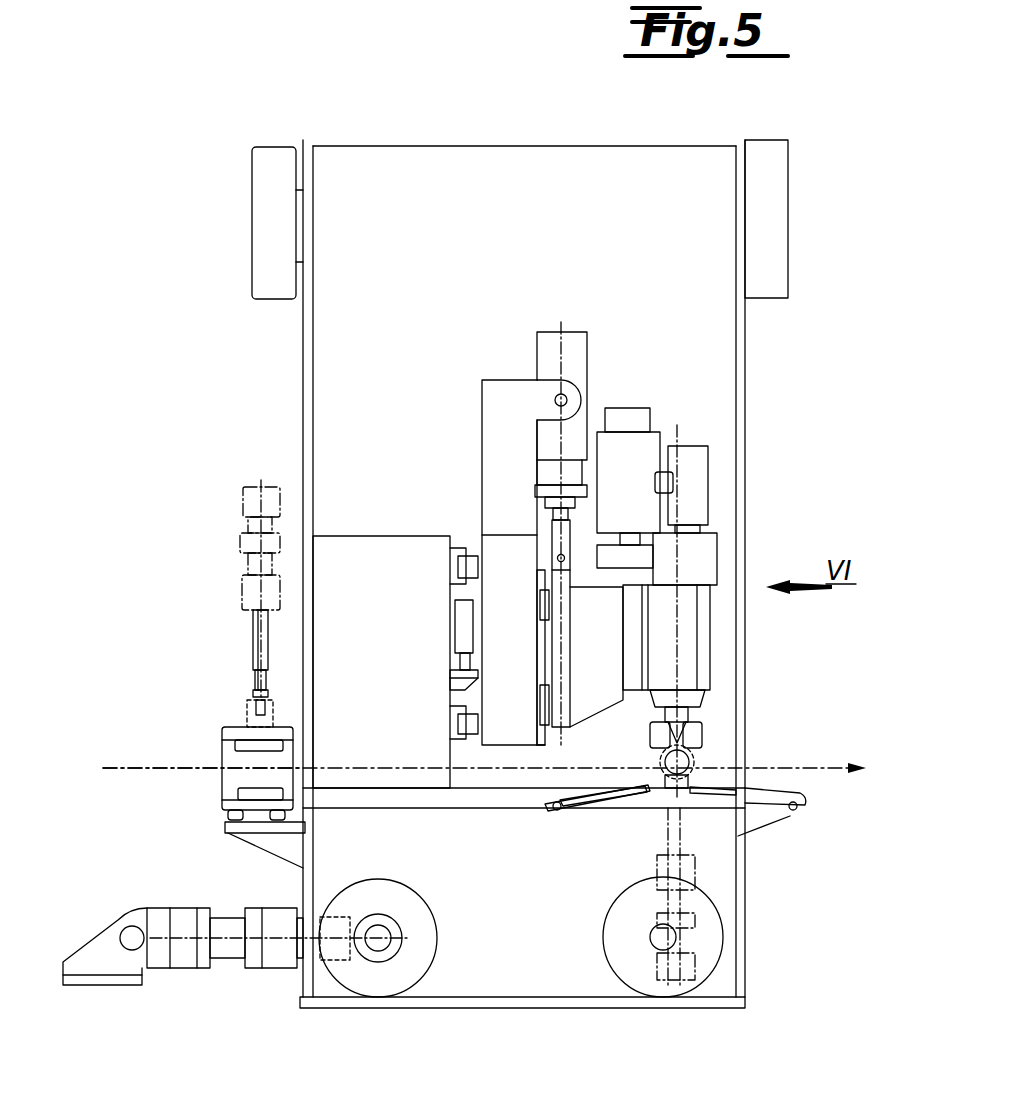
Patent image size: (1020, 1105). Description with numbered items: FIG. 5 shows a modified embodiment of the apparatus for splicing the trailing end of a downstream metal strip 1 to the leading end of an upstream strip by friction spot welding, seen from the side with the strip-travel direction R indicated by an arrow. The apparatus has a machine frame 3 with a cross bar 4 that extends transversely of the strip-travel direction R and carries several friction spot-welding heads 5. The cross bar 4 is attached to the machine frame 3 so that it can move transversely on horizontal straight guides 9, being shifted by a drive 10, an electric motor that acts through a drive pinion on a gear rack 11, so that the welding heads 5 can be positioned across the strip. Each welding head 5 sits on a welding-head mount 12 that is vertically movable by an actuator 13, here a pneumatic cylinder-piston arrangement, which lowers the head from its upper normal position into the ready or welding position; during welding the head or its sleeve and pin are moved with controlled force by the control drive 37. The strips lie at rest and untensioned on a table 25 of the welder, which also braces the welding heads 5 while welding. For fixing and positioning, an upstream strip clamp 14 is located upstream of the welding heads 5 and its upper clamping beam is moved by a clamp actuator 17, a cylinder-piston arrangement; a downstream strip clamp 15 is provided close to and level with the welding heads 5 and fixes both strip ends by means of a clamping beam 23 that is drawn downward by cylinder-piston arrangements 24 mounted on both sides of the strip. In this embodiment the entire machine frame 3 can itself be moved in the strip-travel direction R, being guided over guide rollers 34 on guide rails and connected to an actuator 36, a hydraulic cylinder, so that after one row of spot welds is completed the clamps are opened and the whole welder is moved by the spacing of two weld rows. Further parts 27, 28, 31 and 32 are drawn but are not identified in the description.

The downstream metal strip 1 is at (155, 768).
The machine frame 3 is at (364, 533).
The cross bar 4 is at (507, 555).
The friction spot-welding head 5 is at (710, 712).
The straight guides 9 is at (452, 558).
The drive 10 is at (440, 642).
The gear rack 11 is at (465, 672).
The welding-head mount 12 is at (600, 700).
The actuator 13 is at (574, 335).
The upstream strip clamp 14 is at (223, 716).
The downstream strip clamp 15 is at (712, 741).
The clamp actuator 17 is at (244, 478).
The clamping beam 23 is at (660, 738).
The cylinder-piston arrangement 24 is at (666, 985).
The table 25 is at (595, 815).
The link rod 27 is at (642, 792).
The lever block 28 is at (728, 792).
The right side bracket 31 is at (776, 158).
The left side bracket 32 is at (268, 160).
The guide roller 34 is at (380, 992).
The actuator 36 is at (180, 975).
The control drive 37 is at (722, 462).
The strip-travel direction R is at (814, 790).